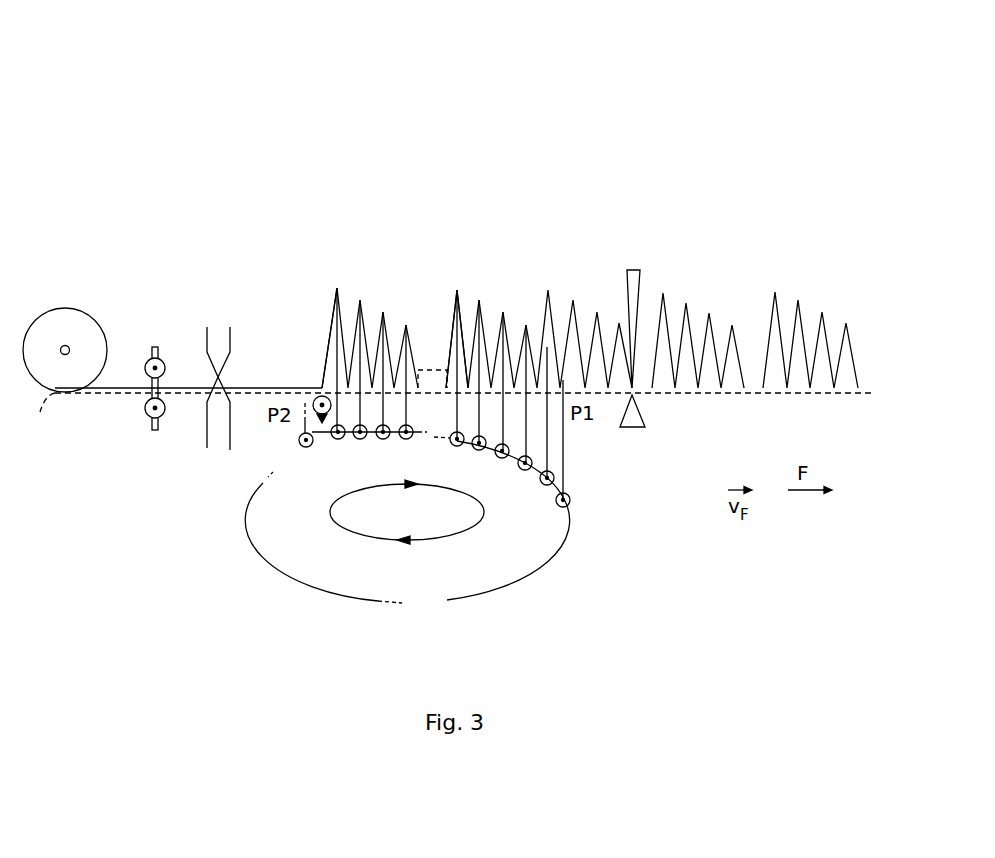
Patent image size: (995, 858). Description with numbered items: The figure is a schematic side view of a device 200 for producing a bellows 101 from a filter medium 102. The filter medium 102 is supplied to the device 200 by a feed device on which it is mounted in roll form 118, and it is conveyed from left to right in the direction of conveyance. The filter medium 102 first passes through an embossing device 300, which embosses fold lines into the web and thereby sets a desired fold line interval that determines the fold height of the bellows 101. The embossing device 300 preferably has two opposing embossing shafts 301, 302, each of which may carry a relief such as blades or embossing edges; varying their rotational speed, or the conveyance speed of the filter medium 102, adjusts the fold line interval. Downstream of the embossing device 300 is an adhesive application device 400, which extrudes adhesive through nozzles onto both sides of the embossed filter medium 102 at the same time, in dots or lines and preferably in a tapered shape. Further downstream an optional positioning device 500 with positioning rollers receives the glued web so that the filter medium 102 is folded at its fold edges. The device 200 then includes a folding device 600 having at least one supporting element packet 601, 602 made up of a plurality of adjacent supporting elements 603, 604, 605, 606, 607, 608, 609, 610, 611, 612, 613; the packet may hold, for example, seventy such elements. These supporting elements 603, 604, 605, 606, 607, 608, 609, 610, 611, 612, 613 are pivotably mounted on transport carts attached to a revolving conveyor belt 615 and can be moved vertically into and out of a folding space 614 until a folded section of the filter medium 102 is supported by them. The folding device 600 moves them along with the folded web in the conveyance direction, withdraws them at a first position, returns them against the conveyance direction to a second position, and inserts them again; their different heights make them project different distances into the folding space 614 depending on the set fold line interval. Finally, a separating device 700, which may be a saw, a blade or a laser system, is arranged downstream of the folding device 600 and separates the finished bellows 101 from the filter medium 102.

The device for producing the bellows 200 is at (178, 150).
The roll form 118 is at (50, 312).
The filter medium 102 is at (140, 388).
The embossing device 300 is at (166, 330).
The embossing shaft 302 is at (155, 345).
The embossing shaft 301 is at (147, 420).
The adhesive application device 400 is at (208, 448).
The positioning device 500 is at (317, 392).
The folding device 600 is at (425, 205).
The supporting element packet 601 is at (500, 200).
The supporting element packet 602 is at (523, 228).
The supporting element 603 is at (310, 433).
The supporting element 604 is at (335, 330).
The supporting element 605 is at (347, 300).
The supporting element 606 is at (361, 300).
The supporting element 607 is at (381, 305).
The supporting element 608 is at (477, 345).
The supporting element 609 is at (492, 323).
The supporting element 610 is at (508, 357).
The supporting element 611 is at (527, 377).
The supporting element 612 is at (553, 350).
The supporting element 613 is at (563, 453).
The folding space 614 is at (437, 291).
The revolving conveyor belt 615 is at (262, 557).
The separating device 700 is at (640, 413).
The bellows 101 is at (663, 297).